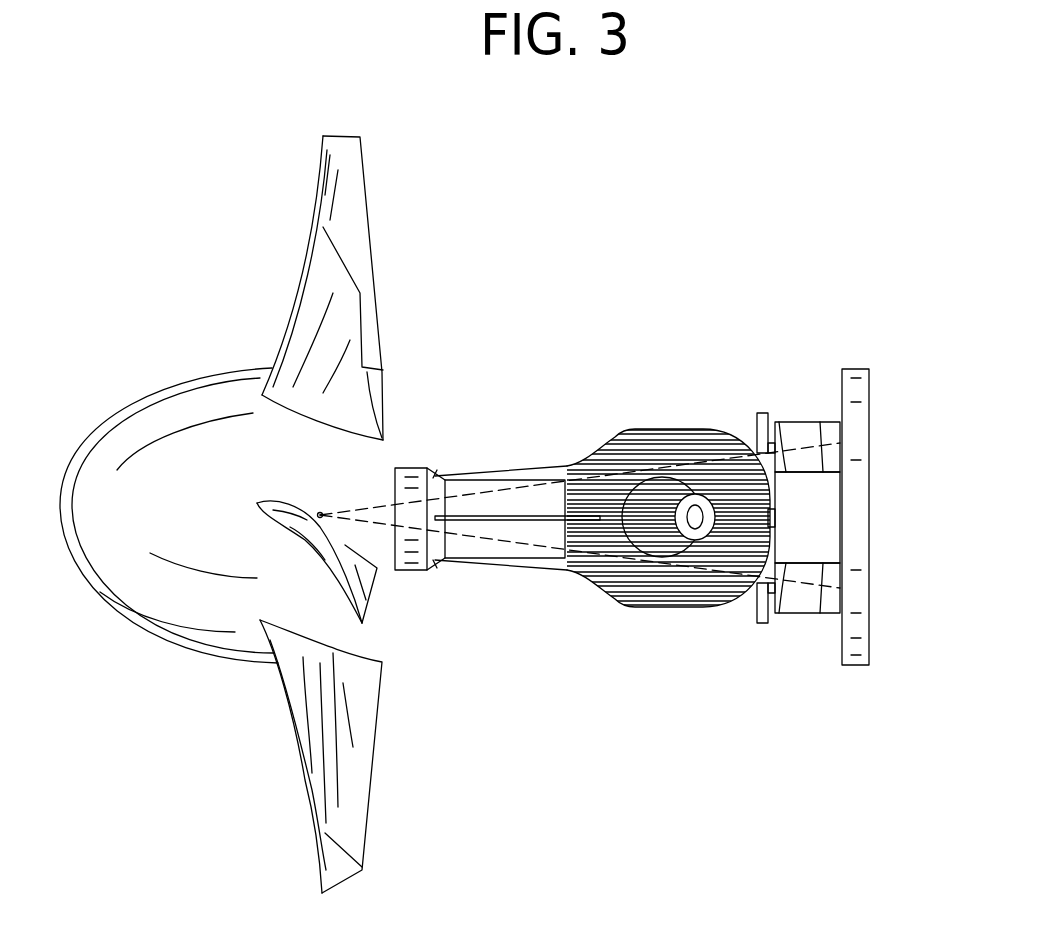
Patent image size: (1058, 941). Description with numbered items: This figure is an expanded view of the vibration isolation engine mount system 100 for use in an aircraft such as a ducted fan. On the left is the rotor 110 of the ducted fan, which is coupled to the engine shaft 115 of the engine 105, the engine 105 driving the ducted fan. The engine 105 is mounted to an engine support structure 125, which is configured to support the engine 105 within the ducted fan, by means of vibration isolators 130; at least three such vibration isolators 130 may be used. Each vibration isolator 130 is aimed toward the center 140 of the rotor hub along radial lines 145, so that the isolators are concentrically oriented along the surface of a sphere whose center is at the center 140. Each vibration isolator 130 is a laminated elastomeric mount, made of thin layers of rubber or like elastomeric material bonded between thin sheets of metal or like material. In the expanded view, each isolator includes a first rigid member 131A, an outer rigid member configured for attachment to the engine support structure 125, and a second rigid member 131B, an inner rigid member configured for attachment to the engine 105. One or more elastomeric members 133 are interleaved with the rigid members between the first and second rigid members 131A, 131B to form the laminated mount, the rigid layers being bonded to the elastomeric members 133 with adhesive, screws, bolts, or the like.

The vibration isolation engine mount system 100 is at (189, 328).
The rotor 110 is at (367, 783).
The center 140 is at (320, 512).
The radial lines 145 is at (470, 497).
The engine shaft 115 is at (465, 557).
The engine 105 is at (650, 430).
The engine support structure 125 is at (821, 523).
The vibration isolators 130 is at (808, 476).
The first rigid member 131A is at (827, 420).
The second rigid member 131B is at (780, 440).
The elastomeric members 133 is at (808, 420).